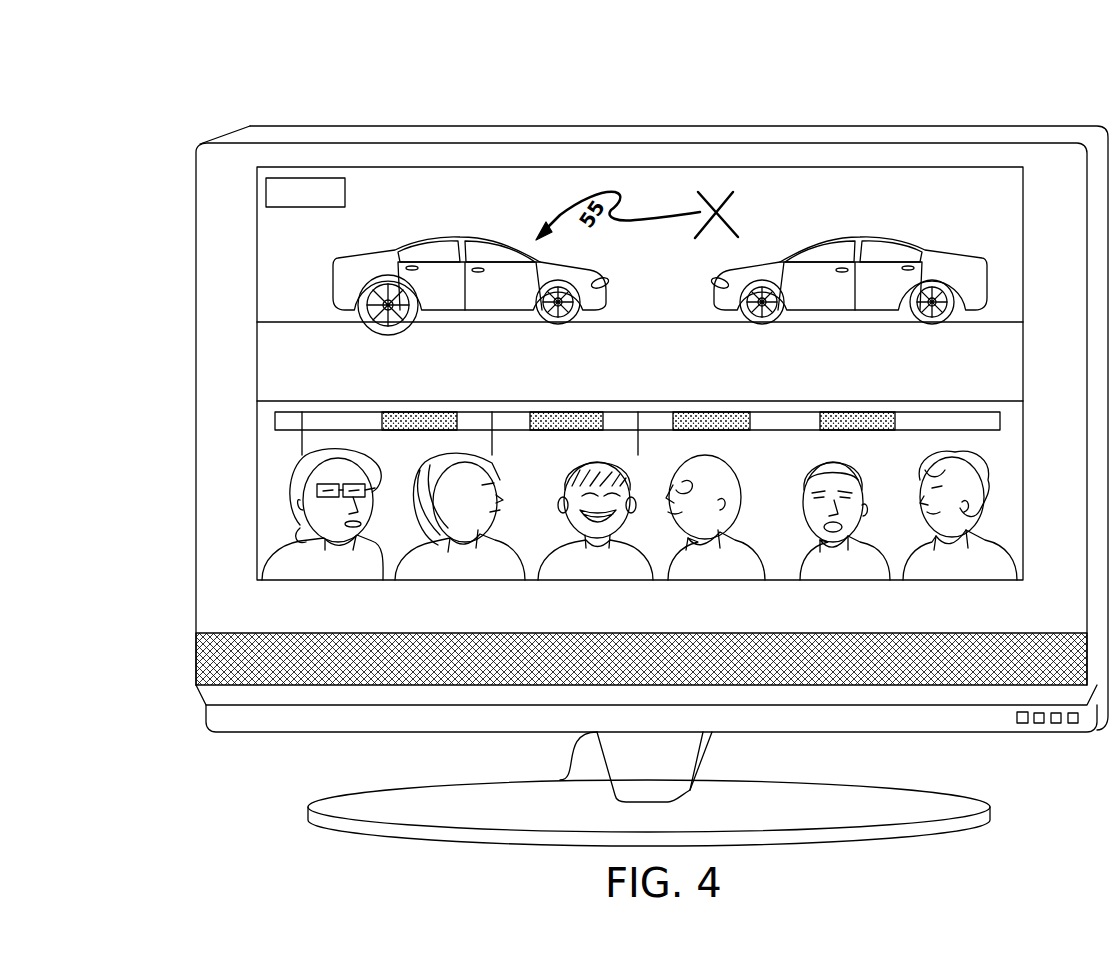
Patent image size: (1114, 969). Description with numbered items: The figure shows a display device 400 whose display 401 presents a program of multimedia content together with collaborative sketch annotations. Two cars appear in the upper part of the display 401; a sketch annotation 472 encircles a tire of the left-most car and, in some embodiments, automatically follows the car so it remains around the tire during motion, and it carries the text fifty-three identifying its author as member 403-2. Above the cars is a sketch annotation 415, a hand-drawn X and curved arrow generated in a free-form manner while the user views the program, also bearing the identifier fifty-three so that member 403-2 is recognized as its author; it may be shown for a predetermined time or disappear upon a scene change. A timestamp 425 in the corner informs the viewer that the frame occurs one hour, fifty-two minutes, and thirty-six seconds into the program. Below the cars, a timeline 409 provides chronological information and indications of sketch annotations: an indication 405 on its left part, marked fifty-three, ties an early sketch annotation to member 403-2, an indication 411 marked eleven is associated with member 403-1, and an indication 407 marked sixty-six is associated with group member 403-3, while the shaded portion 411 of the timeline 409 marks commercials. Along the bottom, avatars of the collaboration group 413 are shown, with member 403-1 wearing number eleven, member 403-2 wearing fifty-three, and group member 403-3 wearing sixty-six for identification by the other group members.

The display device 400 is at (803, 80).
The display 401 is at (628, 142).
The member 403-1 is at (290, 571).
The member 403-2 is at (567, 571).
The group member 403-3 is at (807, 571).
The indication of sketch annotation 405 is at (312, 390).
The indication of sketch annotation 407 is at (645, 390).
The timeline 409 is at (938, 400).
The indication of sketch annotation / shaded portion 411 is at (500, 388).
The collaboration group 413 is at (253, 392).
The sketch annotation 415 is at (727, 220).
The timestamp 425 is at (300, 208).
The sketch annotation 472 is at (373, 280).